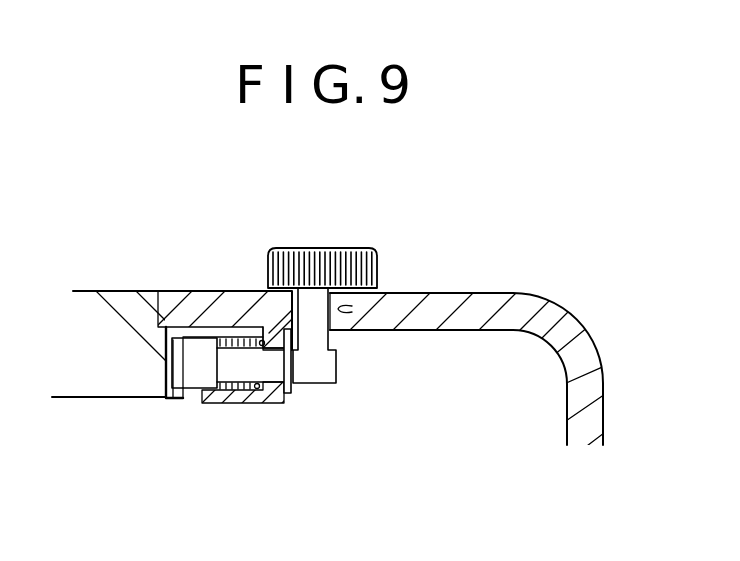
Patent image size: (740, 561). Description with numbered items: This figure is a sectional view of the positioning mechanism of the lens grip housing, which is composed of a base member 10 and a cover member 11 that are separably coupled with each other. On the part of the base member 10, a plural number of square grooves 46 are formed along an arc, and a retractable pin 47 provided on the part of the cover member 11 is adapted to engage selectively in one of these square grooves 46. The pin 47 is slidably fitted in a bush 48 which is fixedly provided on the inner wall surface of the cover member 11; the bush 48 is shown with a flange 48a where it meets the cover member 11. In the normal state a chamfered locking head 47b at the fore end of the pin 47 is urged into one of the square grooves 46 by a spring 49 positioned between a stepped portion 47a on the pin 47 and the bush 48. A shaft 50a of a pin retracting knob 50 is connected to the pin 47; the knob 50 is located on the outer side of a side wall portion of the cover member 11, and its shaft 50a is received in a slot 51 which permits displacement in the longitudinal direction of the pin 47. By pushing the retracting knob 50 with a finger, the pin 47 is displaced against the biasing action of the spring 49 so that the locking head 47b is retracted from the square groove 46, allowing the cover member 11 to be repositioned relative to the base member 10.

The base member 10 is at (87, 290).
The cover member 11 is at (557, 323).
The square groove 46 is at (178, 400).
The retractable pin 47 is at (247, 338).
The stepped portion 47a is at (240, 404).
The chamfered locking head 47b is at (168, 363).
The bush 48 is at (212, 405).
The flange of sleeve 48a is at (285, 404).
The spring 49 is at (222, 332).
The pin retracting knob 50 is at (323, 248).
The shaft 50a is at (319, 332).
The slot 51 is at (352, 310).